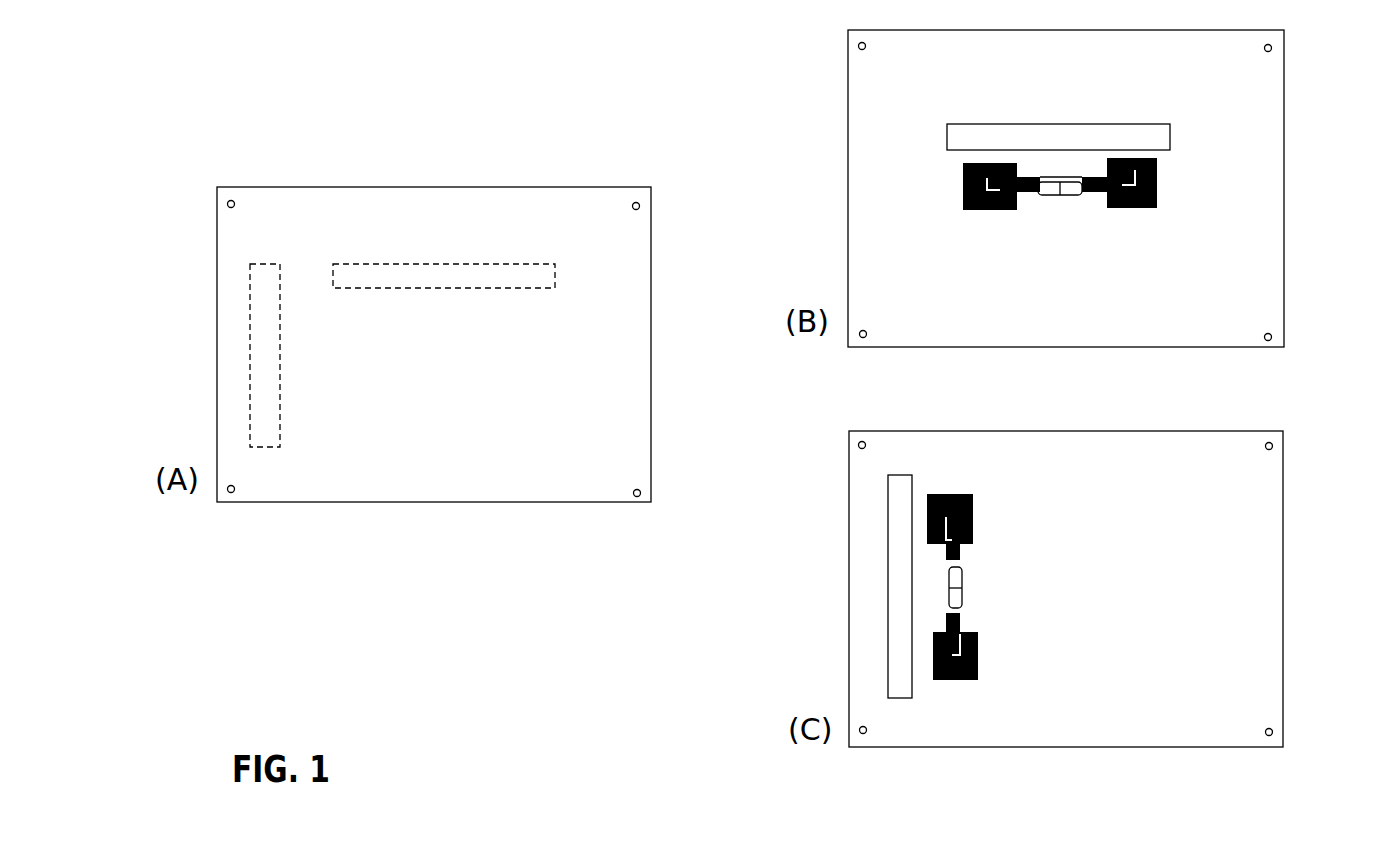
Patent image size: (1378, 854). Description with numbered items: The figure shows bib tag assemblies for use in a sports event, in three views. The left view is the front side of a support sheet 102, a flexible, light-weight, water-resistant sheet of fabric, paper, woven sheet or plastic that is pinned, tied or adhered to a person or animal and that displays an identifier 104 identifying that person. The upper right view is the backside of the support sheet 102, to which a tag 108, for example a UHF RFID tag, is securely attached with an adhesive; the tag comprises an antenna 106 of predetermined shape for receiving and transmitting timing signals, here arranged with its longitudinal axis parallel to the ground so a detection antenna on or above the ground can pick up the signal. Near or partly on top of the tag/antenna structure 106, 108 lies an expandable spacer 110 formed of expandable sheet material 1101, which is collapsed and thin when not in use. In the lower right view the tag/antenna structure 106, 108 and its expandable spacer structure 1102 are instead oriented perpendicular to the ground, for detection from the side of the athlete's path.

The support sheet 102 is at (613, 403).
The identifier 104 is at (567, 332).
The antenna 106 is at (1170, 175).
The tag 108 is at (1067, 193).
The expandable spacer structure 110 is at (656, 374).
The expandable sheet material 1101 is at (373, 275).
The expandable spacer structure 1102 is at (265, 283).